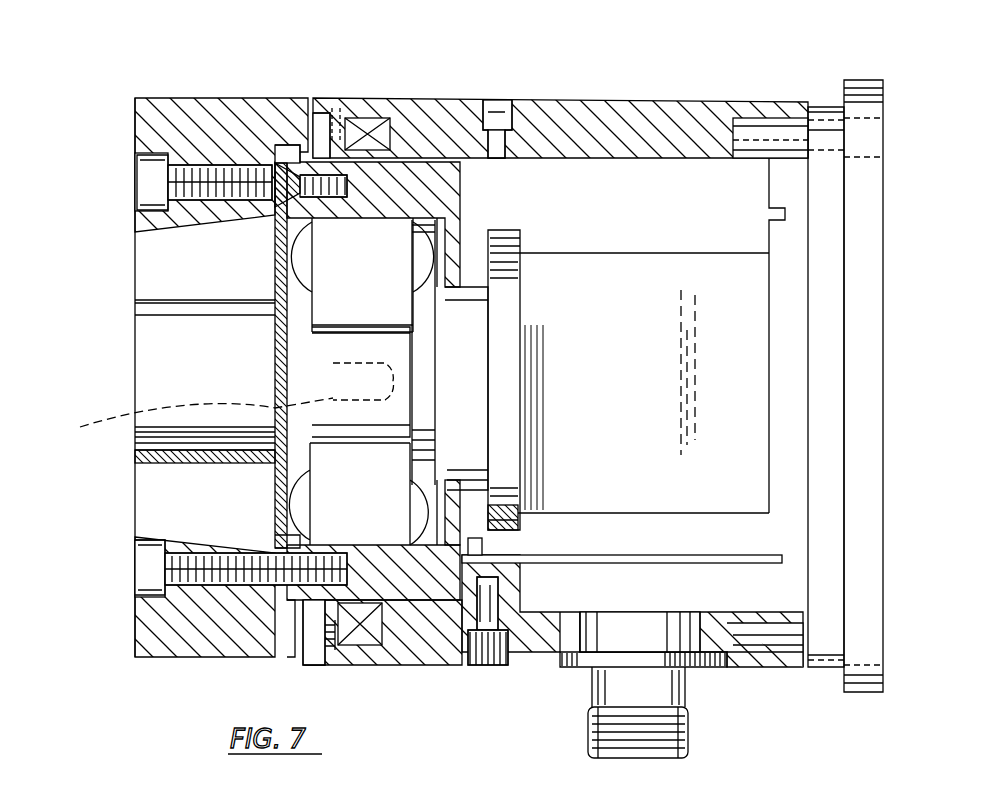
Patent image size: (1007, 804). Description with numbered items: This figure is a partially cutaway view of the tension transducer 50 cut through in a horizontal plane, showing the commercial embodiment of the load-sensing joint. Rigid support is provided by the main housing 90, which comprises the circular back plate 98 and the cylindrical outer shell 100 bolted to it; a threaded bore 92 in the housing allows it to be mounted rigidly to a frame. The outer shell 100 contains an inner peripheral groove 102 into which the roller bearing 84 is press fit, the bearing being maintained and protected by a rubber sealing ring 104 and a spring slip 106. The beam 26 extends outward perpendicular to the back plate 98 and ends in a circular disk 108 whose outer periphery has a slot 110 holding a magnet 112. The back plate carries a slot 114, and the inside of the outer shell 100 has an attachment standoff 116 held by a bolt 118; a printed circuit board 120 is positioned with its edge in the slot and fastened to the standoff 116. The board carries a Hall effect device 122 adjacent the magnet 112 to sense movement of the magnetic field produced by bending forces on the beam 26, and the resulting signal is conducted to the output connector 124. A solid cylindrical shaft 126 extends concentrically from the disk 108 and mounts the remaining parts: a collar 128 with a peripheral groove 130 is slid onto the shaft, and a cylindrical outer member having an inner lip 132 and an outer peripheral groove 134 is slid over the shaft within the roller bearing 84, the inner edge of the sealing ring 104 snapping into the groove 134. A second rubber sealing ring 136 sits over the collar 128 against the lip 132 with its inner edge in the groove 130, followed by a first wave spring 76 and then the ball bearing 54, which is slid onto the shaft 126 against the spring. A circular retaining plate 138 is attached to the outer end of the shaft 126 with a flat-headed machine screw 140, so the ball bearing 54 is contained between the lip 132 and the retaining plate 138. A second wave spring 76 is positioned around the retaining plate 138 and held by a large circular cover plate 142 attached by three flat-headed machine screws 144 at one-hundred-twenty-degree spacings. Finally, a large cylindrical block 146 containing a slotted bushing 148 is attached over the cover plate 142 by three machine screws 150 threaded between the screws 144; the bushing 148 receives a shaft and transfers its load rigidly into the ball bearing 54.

The beam 26 is at (656, 270).
The transducer 50 is at (757, 63).
The ball bearing 54 is at (232, 657).
The wave spring 76 is at (330, 507).
The roller bearing 84 is at (347, 648).
The main housing 90 is at (831, 62).
The threaded bore 92 is at (883, 383).
The circular back plate 98 is at (865, 325).
The cylindrical outer shell 100 is at (645, 101).
The inner peripheral groove 102 is at (386, 100).
The rubber sealing ring 104 is at (357, 100).
The spring slip 106 is at (336, 100).
The circular disk 108 is at (522, 231).
The slot 110 is at (520, 522).
The magnet 112 is at (518, 510).
The slot 114 is at (782, 560).
The attachment standoff 116 is at (465, 640).
The bolt 118 is at (495, 650).
The printed circuit board 120 is at (653, 563).
The Hall effect device 122 is at (487, 563).
The output connector 124 is at (672, 690).
The solid cylindrical shaft 126 is at (395, 357).
The collar 128 is at (473, 393).
The peripheral groove 130 is at (440, 413).
The inner lip 132 is at (462, 237).
The outer peripheral groove 134 is at (460, 100).
The second rubber sealing ring 136 is at (490, 284).
The circular retaining plate 138 is at (217, 463).
The flat-headed machine screw 140 is at (187, 418).
The circular cover plate 142 is at (275, 356).
The flat-headed machine screws 144 is at (290, 100).
The cylindrical block 146 is at (155, 98).
The slotted bushing 148 is at (158, 264).
The machine screws 150 is at (150, 568).